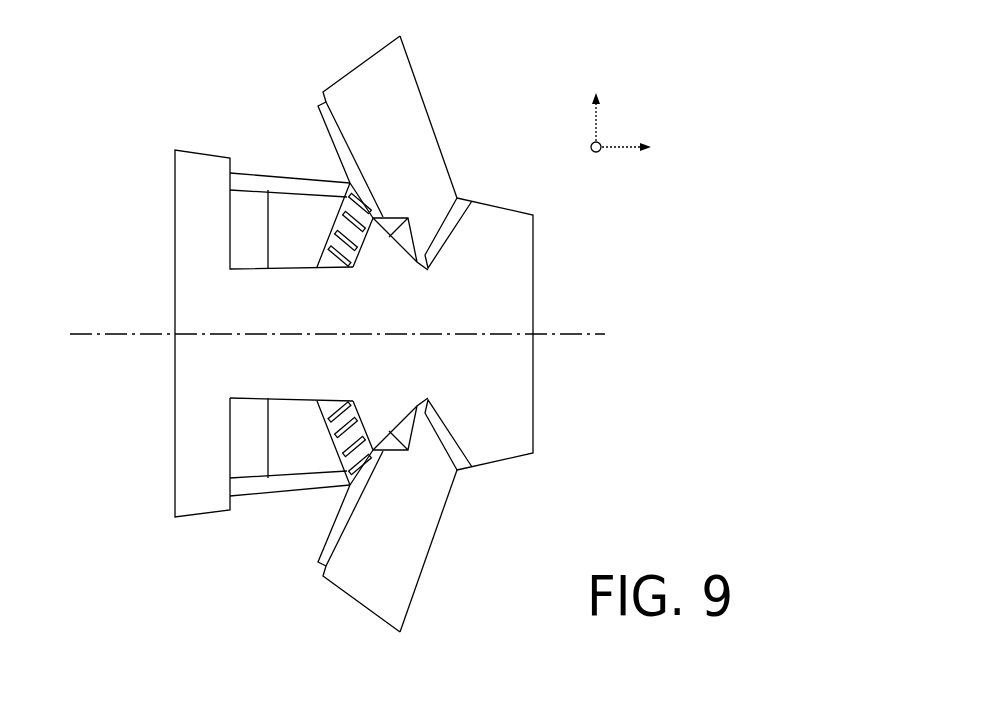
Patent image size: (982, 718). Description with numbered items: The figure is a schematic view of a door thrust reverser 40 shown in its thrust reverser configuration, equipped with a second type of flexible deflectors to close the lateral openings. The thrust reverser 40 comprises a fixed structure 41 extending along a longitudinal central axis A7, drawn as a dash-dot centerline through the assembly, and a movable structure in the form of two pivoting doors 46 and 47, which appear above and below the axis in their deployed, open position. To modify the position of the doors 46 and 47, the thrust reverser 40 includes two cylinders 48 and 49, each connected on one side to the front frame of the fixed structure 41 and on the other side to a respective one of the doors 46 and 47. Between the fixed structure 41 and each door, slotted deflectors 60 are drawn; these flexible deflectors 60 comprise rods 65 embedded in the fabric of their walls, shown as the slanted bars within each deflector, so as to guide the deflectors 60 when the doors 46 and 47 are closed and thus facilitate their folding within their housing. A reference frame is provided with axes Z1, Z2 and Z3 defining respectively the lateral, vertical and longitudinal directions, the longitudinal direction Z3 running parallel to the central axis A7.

The thrust reverser 40 is at (175, 76).
The fixed structure 41 is at (195, 373).
The pivoting door 46 is at (423, 533).
The pivoting door 47 is at (417, 102).
The cylinder 48 is at (313, 187).
The cylinder 49 is at (316, 483).
The deflector 60 is at (333, 242).
The rod 65 is at (336, 258).
The longitudinal central axis A7 is at (583, 333).
The lateral direction Z1 is at (587, 163).
The vertical direction Z2 is at (602, 102).
The longitudinal direction Z3 is at (644, 146).